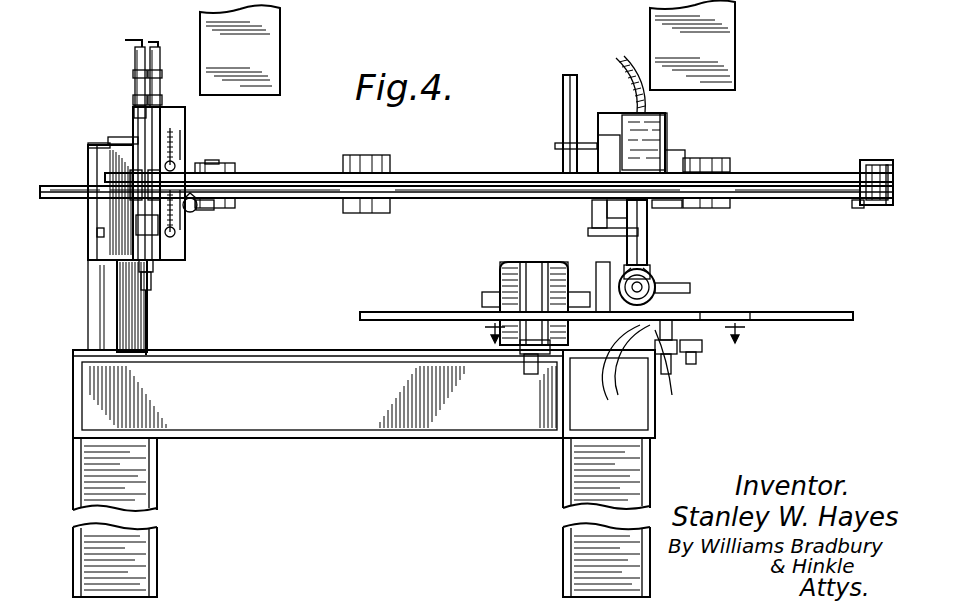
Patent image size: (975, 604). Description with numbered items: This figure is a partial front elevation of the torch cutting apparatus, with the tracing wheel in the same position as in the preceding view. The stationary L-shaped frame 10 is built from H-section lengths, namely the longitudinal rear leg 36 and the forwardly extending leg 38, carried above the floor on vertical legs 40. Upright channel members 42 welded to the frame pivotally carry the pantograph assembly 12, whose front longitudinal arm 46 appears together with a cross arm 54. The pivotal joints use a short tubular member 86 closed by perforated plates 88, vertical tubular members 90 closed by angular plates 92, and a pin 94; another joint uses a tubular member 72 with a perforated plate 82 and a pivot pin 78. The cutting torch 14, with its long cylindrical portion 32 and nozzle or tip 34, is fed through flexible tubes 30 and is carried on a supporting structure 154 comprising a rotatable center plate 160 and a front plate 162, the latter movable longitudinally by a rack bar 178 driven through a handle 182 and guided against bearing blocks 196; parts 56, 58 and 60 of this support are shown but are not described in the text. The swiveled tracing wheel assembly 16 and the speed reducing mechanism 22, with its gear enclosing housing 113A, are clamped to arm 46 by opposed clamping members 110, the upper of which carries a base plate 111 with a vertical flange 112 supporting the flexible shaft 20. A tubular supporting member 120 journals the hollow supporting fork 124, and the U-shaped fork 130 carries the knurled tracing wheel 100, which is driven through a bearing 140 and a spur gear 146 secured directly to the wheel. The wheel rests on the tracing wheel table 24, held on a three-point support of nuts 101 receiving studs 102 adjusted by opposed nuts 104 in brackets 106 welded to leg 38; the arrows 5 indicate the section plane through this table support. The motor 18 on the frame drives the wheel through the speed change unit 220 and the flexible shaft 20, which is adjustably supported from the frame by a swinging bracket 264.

The L-shaped frame 10 is at (412, 440).
The pantograph assembly 12 is at (772, 170).
The metal cutting torch 14 is at (135, 118).
The tracing wheel assembly 16 is at (665, 205).
The electric motor 18 is at (498, 268).
The flexible shaft 20 is at (615, 62).
The speed reducing mechanism 22 is at (668, 132).
The tracing wheel table 24 is at (838, 312).
The flexible tubes 30 is at (126, 42).
The cylindrical portion 32 is at (160, 245).
The nozzle or tip 34 is at (152, 300).
The longitudinal rear leg 36 is at (318, 412).
The forwardly extending leg 38 is at (656, 425).
The vertical legs 40 is at (130, 470).
The upright members 42 is at (88, 299).
The front longitudinal arm 46 is at (455, 180).
The cross arm 54 is at (858, 205).
The cap 56 is at (122, 138).
The plate 58 is at (90, 146).
The stop 60 is at (96, 233).
The tubular member 72 is at (888, 208).
The pivot pin 78 is at (872, 160).
The perforated plate 82 is at (858, 168).
The short tubular member 86 is at (235, 170).
The perforated plates 88 is at (232, 170).
The vertical tubular members 90 is at (176, 170).
The angular plates 92 is at (196, 210).
The pin 94 is at (205, 165).
The knurled tracing wheel 100 is at (656, 284).
The nuts 101 is at (750, 313).
The studs 102 is at (640, 362).
The opposed nuts 104 is at (532, 368).
The brackets 106 is at (556, 410).
The clamping members 110 is at (592, 210).
The base plate 111 is at (667, 163).
The vertical flange 112 is at (652, 128).
The gear enclosing housing 113A is at (630, 120).
The tubular supporting member 120 is at (650, 205).
The tracing wheel supporting fork 124 is at (660, 262).
The fork 130 is at (628, 249).
The bearing 140 is at (652, 270).
The spur gear 146 is at (690, 292).
The supporting structure 154 is at (185, 112).
The center plate 160 is at (110, 218).
The front plate 162 is at (163, 108).
The rack bar 178 is at (183, 135).
The handle 182 is at (192, 212).
The bearing blocks 196 is at (120, 160).
The speed change unit 220 is at (598, 266).
The swinging bracket 264 is at (565, 80).
The section line 5 is at (612, 339).